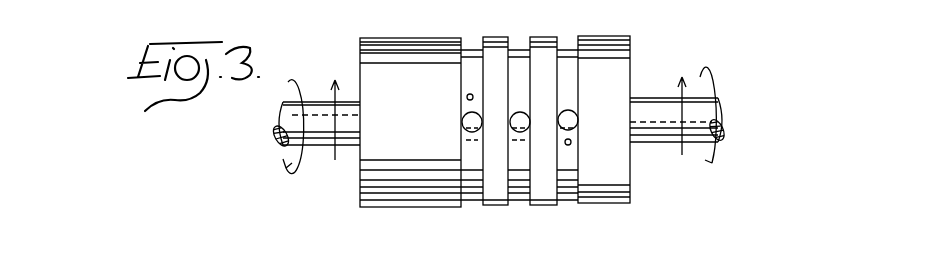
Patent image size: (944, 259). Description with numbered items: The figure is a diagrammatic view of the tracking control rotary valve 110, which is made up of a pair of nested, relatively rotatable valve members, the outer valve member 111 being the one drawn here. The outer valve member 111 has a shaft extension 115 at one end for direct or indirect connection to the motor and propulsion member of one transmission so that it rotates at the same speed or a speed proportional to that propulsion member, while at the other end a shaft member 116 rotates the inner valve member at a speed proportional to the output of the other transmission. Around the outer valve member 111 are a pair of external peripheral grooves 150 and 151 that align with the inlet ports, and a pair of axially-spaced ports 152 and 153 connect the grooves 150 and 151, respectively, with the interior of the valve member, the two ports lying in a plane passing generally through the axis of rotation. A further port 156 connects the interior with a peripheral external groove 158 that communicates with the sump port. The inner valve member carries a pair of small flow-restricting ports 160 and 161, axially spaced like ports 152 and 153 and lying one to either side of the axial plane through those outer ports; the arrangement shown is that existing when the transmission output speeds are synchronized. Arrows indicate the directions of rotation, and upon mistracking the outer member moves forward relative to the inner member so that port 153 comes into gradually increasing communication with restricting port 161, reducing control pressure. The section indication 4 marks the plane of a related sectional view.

The rotary valve 110 is at (622, 25).
The outer valve member 111 is at (380, 44).
The shaft extension 115 is at (297, 124).
The shaft member 116 is at (717, 100).
The external peripheral groove 150 is at (477, 204).
The external peripheral groove 151 is at (572, 203).
The port 152 is at (463, 122).
The port 153 is at (573, 113).
The port 156 is at (520, 114).
The peripheral external groove 158 is at (516, 204).
The port 160 is at (466, 97).
The port 161 is at (572, 144).
The section line 4 is at (499, 131).